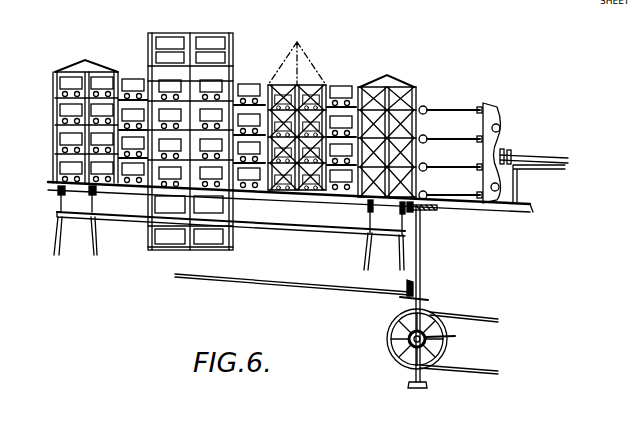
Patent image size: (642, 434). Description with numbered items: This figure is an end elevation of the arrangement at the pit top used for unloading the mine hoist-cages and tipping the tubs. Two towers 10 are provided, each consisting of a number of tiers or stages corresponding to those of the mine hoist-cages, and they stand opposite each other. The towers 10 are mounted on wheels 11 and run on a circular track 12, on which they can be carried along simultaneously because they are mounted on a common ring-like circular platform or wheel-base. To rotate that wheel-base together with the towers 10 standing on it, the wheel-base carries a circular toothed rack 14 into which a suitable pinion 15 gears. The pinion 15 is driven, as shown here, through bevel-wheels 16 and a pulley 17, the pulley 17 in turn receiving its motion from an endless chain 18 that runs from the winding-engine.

The tower 10 is at (58, 74).
The wheels 11 is at (58, 197).
The circular track 12 is at (60, 214).
The circular toothed rack 14 is at (422, 216).
The pinion 15 is at (430, 211).
The bevel-wheels 16 is at (390, 348).
The pulley 17 is at (448, 337).
The endless chain 18 is at (457, 320).